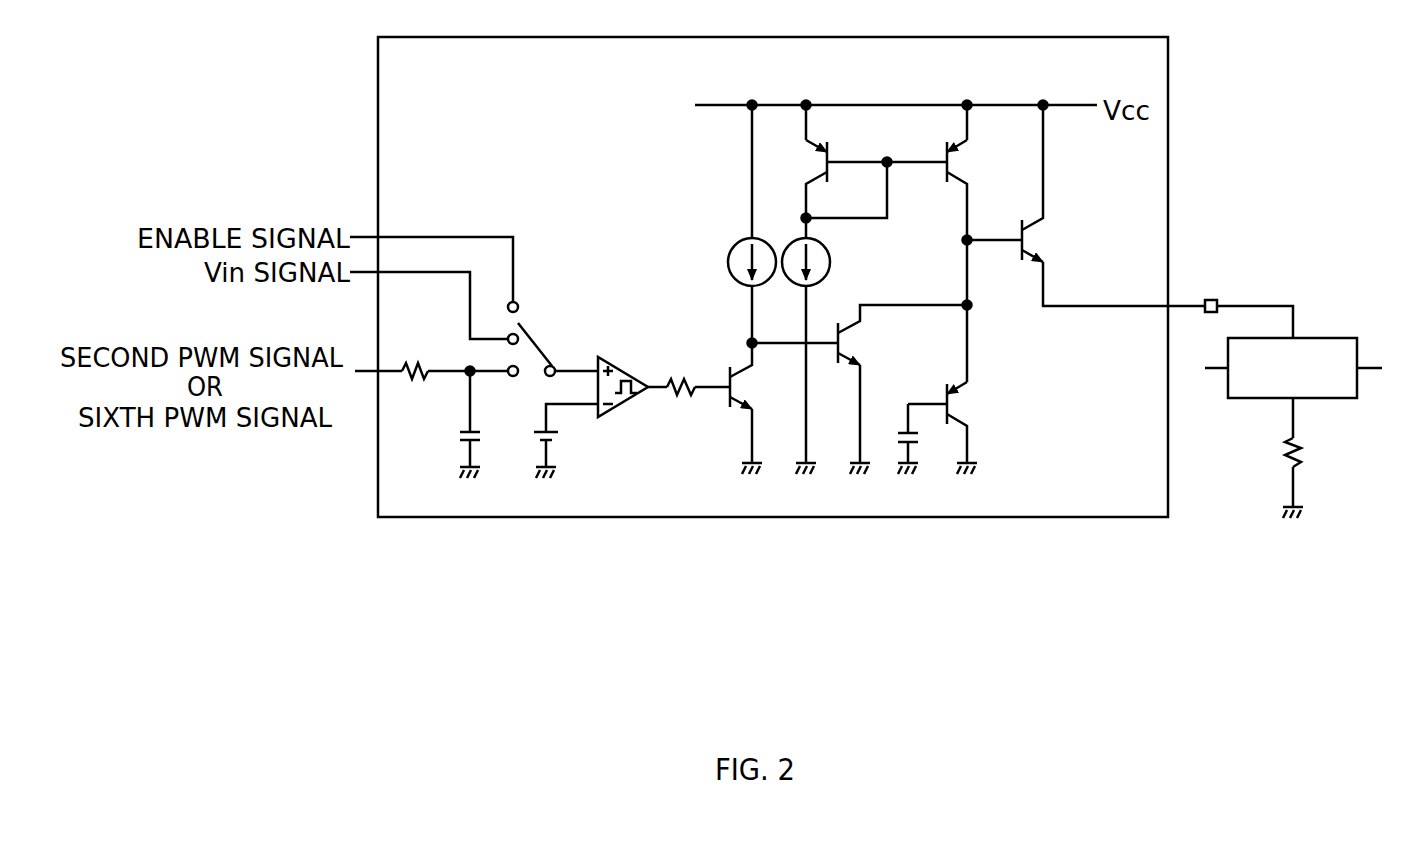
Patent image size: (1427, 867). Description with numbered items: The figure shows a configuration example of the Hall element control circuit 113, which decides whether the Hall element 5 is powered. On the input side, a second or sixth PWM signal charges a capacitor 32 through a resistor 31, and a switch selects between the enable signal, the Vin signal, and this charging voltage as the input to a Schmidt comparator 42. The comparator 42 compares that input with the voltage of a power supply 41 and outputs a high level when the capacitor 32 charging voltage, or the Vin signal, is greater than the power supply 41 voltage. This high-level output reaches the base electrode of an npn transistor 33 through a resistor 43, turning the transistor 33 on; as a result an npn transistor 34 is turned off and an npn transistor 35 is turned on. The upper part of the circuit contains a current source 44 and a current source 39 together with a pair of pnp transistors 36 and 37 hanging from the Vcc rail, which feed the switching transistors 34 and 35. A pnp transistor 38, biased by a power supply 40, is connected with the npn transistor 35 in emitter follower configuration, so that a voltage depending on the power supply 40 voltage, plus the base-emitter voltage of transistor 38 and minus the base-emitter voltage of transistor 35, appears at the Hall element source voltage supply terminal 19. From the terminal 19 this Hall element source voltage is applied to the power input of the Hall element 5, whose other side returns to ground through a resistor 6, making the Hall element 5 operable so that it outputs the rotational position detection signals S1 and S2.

The Hall element control circuit 113 is at (1169, 147).
The resistor 31 is at (416, 362).
The capacitor 32 is at (458, 437).
The Schmidt comparator 42 is at (616, 362).
The power supply 41 is at (560, 437).
The resistor 43 is at (684, 398).
The npn transistor 33 is at (727, 368).
The current source 44 is at (727, 263).
The current source 39 is at (831, 262).
The pnp transistor 36 is at (828, 150).
The pnp transistor 37 is at (946, 150).
The npn transistor 34 is at (838, 356).
The npn transistor 35 is at (1020, 258).
The pnp transistor 38 is at (945, 392).
The power supply 40 is at (914, 438).
The Hall element source voltage supply terminal 19 is at (1213, 300).
The Hall element 5 is at (1322, 338).
The resistor 6 is at (1300, 452).